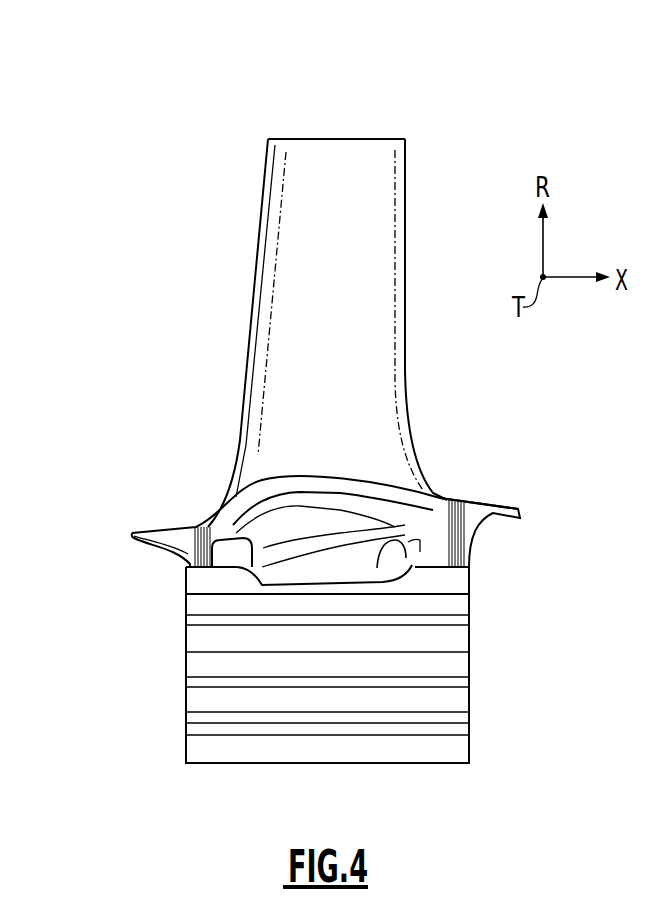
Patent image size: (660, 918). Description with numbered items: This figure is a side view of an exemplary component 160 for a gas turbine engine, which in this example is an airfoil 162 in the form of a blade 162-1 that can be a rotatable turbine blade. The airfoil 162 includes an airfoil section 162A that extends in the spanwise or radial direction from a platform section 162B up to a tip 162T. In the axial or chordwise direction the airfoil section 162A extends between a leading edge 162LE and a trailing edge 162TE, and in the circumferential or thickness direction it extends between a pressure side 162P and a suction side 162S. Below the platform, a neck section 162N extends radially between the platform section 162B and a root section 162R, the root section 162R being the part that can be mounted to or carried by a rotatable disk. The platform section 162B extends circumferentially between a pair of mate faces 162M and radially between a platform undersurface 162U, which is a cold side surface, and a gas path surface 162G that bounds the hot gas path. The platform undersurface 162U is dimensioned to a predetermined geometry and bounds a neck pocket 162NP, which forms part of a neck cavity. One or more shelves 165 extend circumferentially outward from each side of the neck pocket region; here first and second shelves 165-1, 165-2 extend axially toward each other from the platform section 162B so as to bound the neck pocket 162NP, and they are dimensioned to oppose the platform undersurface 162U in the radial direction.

The component 160 is at (253, 92).
The airfoil 162 is at (375, 294).
The blade 162-1 is at (394, 124).
The airfoil tip 162T is at (306, 148).
The suction side 162S is at (386, 161).
The pressure side 162P is at (389, 183).
The airfoil section 162A is at (272, 236).
The leading edge 162LE is at (253, 293).
The trailing edge 162TE is at (407, 332).
The gas path surface 162G is at (347, 498).
The platform undersurface 162U is at (388, 482).
The neck section 162N is at (370, 522).
The neck pocket 162NP is at (273, 532).
The platform section 162B is at (163, 528).
The mate faces 162M is at (177, 540).
The root section 162R is at (460, 620).
The shelves 165 is at (135, 598).
The first shelf 165-1 is at (238, 558).
The second shelf 165-2 is at (430, 558).